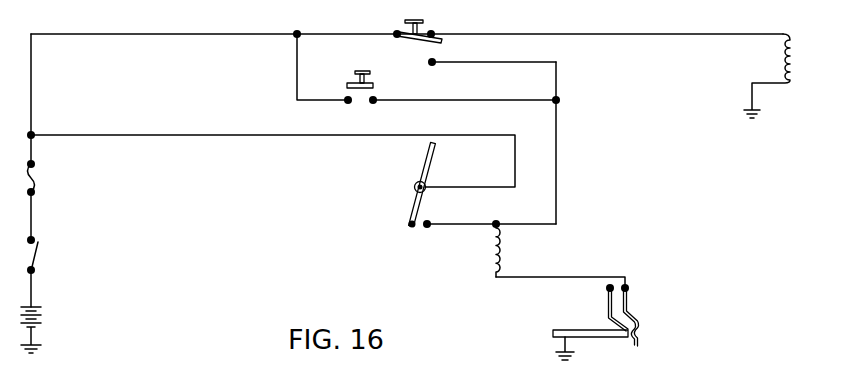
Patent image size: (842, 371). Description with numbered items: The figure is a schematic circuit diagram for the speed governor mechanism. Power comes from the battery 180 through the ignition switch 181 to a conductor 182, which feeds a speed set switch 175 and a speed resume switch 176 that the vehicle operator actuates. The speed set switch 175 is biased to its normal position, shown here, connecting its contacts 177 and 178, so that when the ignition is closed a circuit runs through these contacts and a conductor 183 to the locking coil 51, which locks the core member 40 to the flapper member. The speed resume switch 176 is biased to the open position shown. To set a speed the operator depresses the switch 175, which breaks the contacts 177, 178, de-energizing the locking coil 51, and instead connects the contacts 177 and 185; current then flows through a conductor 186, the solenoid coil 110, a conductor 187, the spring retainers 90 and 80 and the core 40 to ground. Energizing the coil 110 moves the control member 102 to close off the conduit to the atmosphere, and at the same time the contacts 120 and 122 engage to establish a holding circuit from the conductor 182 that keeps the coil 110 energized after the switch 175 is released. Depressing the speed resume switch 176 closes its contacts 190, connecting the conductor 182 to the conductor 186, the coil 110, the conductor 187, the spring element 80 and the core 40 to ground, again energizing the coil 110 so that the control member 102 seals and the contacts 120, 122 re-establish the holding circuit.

The core member 40 is at (612, 338).
The locking coil 51 is at (778, 47).
The spring retainer 80 is at (630, 301).
The spring retainer 90 is at (606, 301).
The control member 102 is at (425, 161).
The solenoid coil 110 is at (502, 256).
The contact 120 is at (413, 227).
The contact 122 is at (428, 228).
The speed set switch 175 is at (422, 25).
The speed resume switch 176 is at (366, 74).
The contact 177 is at (392, 36).
The contact 178 is at (441, 38).
The battery 180 is at (48, 315).
The ignition switch 181 is at (37, 253).
The conductor 182 is at (33, 147).
The conductor 183 is at (669, 34).
The contact 185 is at (436, 64).
The conductor 186 is at (560, 146).
The conductor 187 is at (565, 276).
The contacts 190 is at (372, 103).